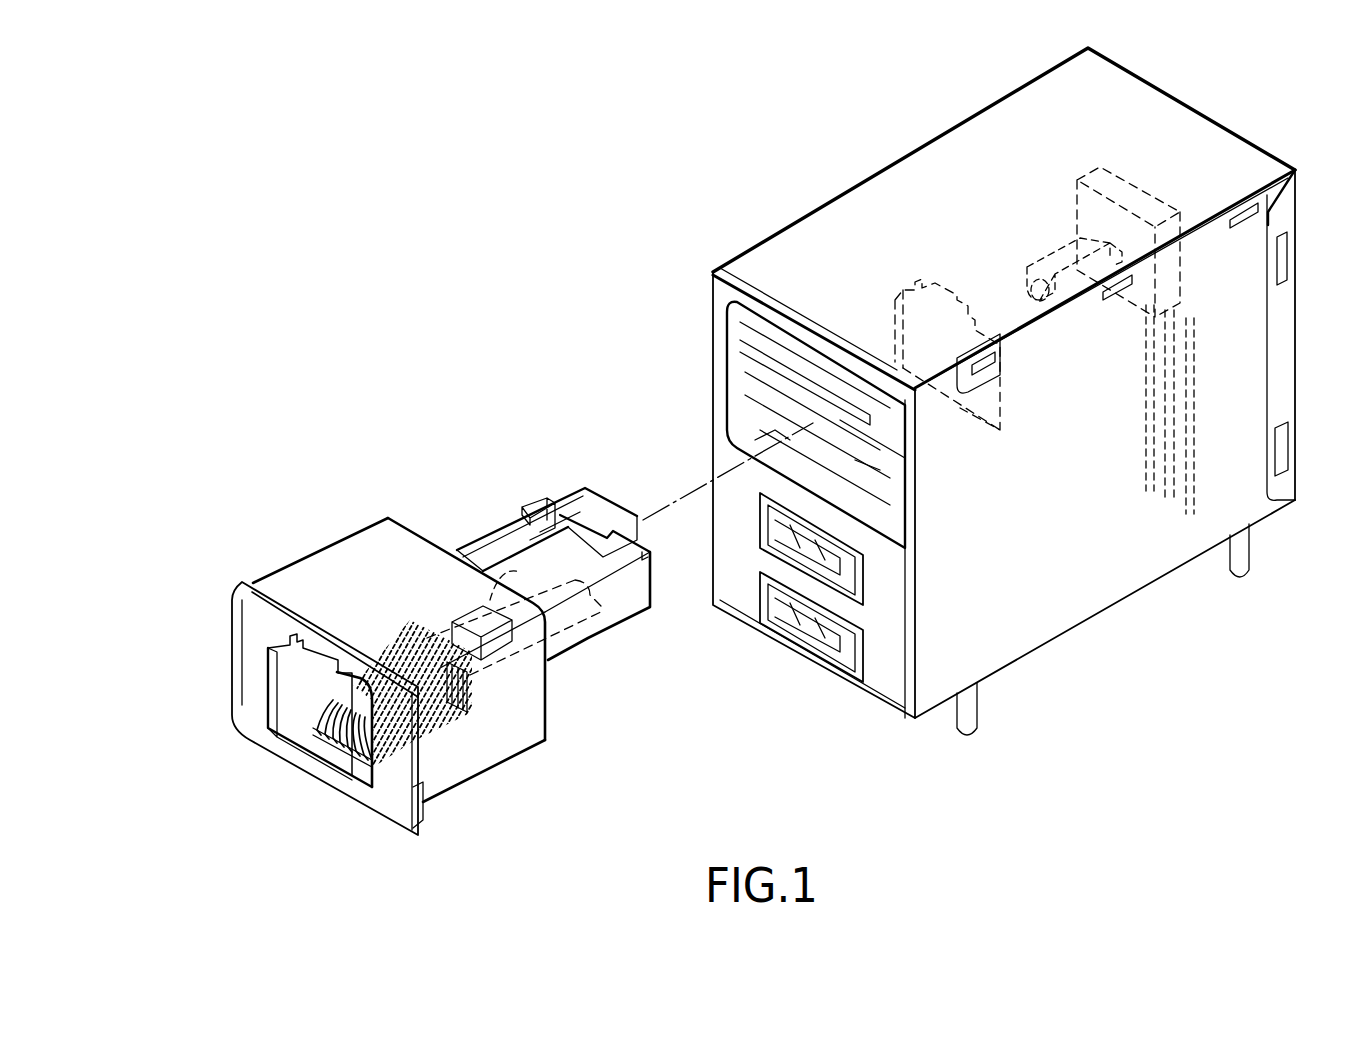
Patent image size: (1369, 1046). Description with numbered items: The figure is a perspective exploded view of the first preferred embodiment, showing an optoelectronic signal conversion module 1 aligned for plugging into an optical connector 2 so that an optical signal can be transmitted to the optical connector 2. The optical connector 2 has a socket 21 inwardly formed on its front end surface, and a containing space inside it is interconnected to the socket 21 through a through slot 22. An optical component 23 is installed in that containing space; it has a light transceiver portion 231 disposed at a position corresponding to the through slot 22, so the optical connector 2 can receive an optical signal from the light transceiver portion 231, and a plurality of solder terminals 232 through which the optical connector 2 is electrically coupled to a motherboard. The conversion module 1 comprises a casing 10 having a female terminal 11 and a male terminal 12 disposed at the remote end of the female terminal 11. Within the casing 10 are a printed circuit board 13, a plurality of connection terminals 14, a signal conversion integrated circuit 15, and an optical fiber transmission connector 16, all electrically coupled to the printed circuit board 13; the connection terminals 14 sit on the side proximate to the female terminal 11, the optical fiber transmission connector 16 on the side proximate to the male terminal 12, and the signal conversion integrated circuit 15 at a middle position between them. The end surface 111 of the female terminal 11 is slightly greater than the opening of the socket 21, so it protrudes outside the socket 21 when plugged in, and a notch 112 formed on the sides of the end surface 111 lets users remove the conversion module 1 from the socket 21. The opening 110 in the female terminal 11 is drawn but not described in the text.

The optoelectronic signal conversion module 1 is at (325, 495).
The casing 10 is at (500, 737).
The female terminal 11 is at (222, 668).
The insertion opening 110 is at (299, 727).
The end surface 111 is at (245, 620).
The notch 112 is at (422, 780).
The male terminal 12 is at (618, 610).
The printed circuit board 13 is at (543, 668).
The connection terminals 14 is at (358, 713).
The signal conversion integrated circuit 15 is at (478, 607).
The optical fiber transmission connector 16 is at (556, 560).
The optical connector 2 is at (910, 115).
The socket 21 is at (752, 364).
The through slot 22 is at (1028, 293).
The optical component 23 is at (1130, 196).
The light transceiver portion 231 is at (1075, 227).
The solder terminals 232 is at (1191, 375).